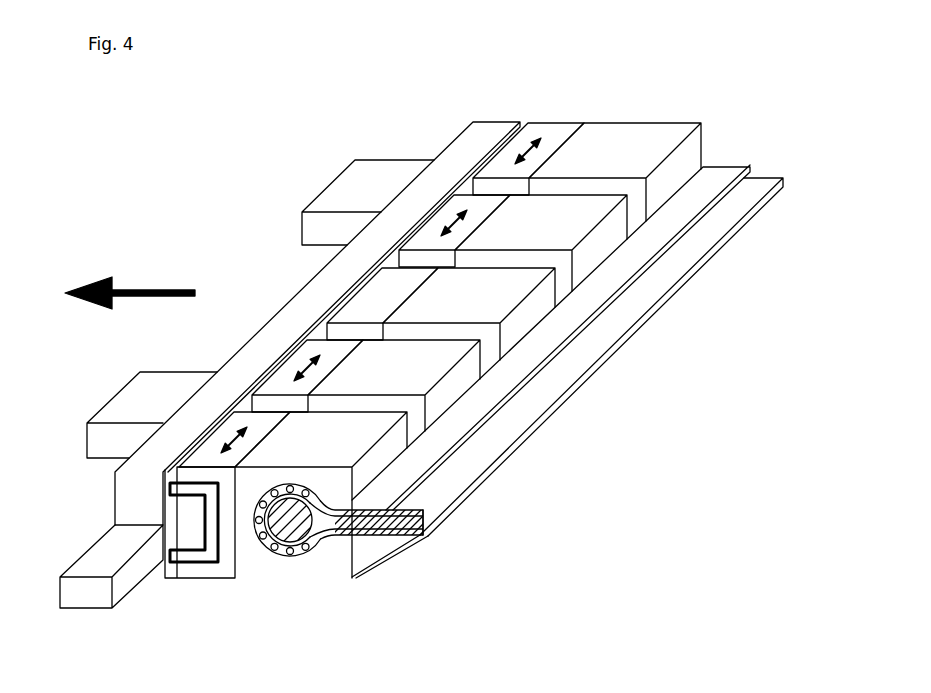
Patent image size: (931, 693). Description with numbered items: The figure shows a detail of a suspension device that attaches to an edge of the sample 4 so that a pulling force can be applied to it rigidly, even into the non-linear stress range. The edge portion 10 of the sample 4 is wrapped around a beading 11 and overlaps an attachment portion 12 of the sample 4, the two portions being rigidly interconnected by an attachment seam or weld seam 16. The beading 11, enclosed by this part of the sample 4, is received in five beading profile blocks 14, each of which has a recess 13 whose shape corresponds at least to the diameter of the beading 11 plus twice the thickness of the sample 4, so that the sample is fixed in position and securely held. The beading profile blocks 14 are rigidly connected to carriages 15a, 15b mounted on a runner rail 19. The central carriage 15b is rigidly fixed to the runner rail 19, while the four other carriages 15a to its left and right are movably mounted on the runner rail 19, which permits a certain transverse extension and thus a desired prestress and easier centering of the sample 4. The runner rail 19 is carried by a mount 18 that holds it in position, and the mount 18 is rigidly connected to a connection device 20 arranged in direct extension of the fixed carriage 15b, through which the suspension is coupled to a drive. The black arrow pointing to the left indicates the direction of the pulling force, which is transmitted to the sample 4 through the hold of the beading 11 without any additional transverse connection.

The sample 4 is at (618, 313).
The edge portion 10 is at (718, 176).
The beading 11 is at (290, 543).
The attachment portion 12 is at (367, 537).
The recess 13 is at (322, 543).
The beading profile block 14 is at (637, 140).
The movable carriage 15a is at (548, 128).
The central carriage 15b is at (400, 312).
The attachment seam 16 is at (407, 533).
The mount 18 is at (125, 498).
The runner rail 19 is at (200, 540).
The connection device 20 is at (356, 190).